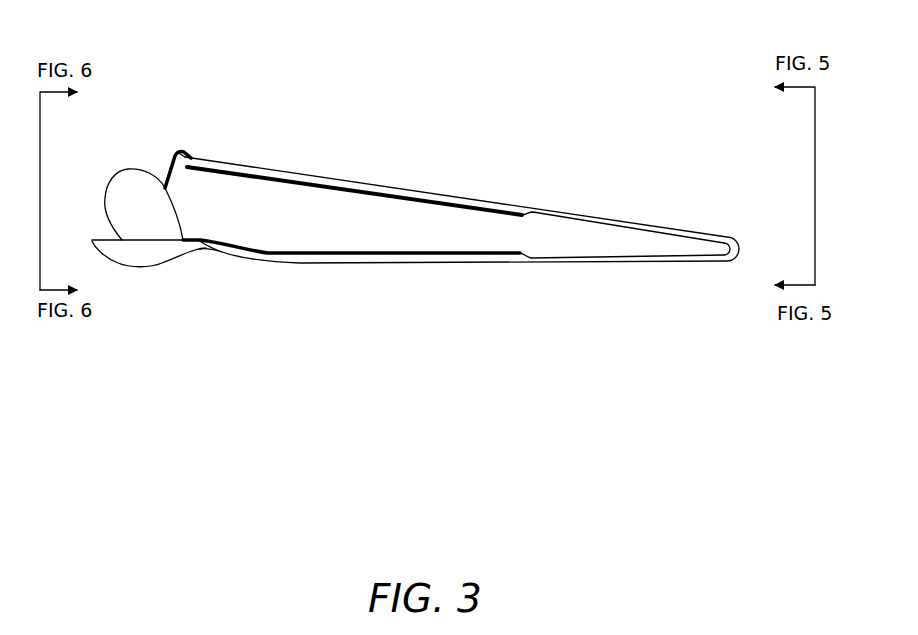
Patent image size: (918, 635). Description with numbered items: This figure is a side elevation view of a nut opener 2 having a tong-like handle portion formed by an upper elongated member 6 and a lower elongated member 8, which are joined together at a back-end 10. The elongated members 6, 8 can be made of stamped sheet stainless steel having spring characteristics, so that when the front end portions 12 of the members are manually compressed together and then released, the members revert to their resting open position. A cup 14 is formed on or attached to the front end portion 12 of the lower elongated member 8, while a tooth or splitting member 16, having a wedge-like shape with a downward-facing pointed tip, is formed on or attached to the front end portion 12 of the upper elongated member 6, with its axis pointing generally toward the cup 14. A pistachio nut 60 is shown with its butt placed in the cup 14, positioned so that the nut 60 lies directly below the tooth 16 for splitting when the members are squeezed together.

The nut opener 2 is at (501, 105).
The upper elongated member 6 is at (302, 175).
The lower elongated member 8 is at (460, 263).
The back-end 10 is at (727, 262).
The front end portion 12 is at (202, 157).
The cup 14 is at (157, 253).
The tooth or splitting member 16 is at (167, 167).
The pistachio nut 60 is at (106, 203).